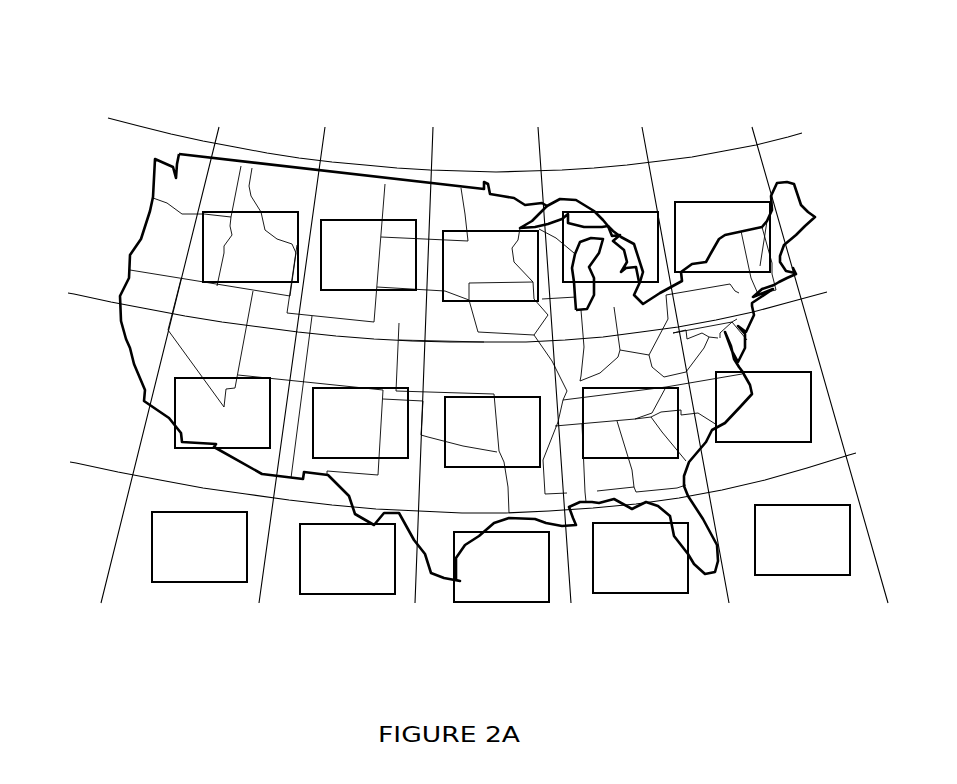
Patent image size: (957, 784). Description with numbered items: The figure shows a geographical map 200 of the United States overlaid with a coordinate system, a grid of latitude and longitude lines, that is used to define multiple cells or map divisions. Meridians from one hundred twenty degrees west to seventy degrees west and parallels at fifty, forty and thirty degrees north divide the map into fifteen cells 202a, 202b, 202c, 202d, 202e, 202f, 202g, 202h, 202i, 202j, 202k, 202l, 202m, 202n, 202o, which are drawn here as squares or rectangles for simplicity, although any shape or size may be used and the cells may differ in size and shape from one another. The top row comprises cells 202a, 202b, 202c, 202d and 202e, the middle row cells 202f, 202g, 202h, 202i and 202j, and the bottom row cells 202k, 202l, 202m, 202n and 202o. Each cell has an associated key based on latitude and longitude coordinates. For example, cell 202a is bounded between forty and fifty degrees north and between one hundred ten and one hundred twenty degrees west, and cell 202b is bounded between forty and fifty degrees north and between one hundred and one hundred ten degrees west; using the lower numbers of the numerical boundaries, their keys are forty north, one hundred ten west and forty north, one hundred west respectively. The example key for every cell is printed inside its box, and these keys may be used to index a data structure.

The geographical map 200 is at (62, 54).
The cell 202a is at (249, 272).
The cell 202b is at (367, 280).
The cell 202c is at (489, 291).
The cell 202d is at (609, 272).
The cell 202e is at (721, 262).
The cell 202f is at (223, 438).
The cell 202g is at (359, 448).
The cell 202h is at (491, 457).
The cell 202i is at (633, 448).
The cell 202j is at (766, 432).
The cell 202k is at (198, 572).
The cell 202l is at (352, 584).
The cell 202m is at (494, 592).
The cell 202n is at (639, 583).
The cell 202o is at (801, 565).